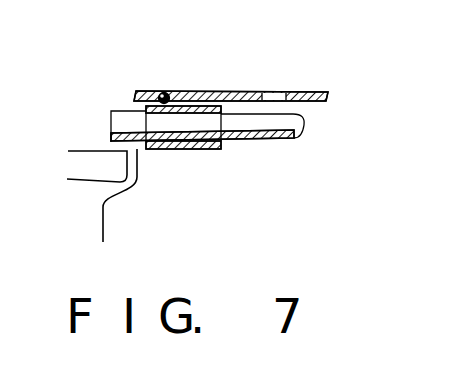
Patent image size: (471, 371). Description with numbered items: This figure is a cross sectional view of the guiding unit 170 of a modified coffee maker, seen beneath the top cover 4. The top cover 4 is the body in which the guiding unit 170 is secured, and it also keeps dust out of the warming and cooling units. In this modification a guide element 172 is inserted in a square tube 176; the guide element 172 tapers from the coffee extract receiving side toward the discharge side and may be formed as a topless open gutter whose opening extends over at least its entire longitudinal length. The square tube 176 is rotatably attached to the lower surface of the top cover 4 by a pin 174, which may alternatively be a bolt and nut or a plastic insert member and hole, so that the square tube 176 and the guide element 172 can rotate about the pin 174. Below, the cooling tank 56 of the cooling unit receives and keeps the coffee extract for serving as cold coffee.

The top cover 4 is at (205, 91).
The guiding unit 170 is at (273, 78).
The guide element 172 is at (298, 136).
The pin 174 is at (162, 93).
The square tube 176 is at (183, 150).
The cooling tank 56 is at (104, 217).